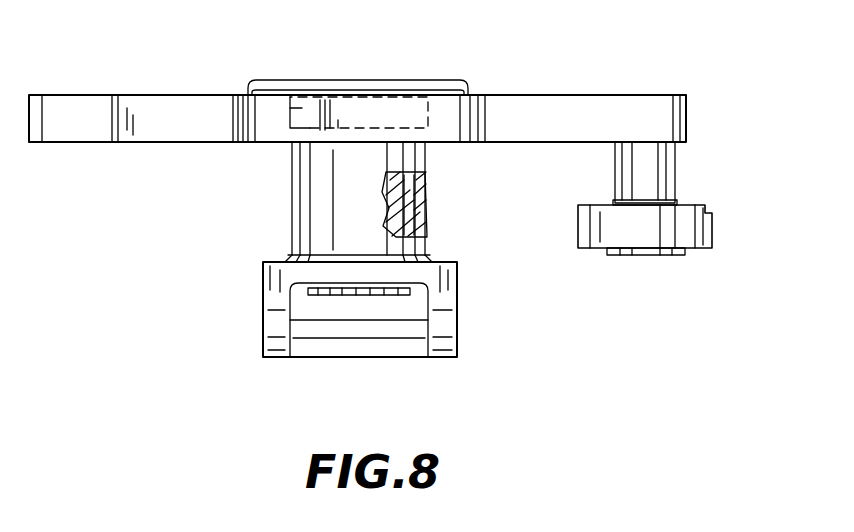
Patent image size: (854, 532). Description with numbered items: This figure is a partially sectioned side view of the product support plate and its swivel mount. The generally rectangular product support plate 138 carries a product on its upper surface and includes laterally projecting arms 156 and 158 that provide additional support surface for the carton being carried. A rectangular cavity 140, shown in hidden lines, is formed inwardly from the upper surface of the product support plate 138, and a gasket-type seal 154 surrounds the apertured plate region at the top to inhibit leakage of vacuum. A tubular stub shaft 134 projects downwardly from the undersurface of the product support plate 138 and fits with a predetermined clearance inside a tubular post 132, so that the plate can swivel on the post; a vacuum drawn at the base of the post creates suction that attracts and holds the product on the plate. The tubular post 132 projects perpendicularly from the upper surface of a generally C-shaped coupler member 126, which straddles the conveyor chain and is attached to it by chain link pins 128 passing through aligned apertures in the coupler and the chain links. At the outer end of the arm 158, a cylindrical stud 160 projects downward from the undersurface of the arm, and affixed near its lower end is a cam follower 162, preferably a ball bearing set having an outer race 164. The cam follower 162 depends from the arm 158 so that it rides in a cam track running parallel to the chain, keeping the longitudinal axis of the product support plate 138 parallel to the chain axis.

The coupler member 126 is at (455, 262).
The chain link pins 128 is at (370, 334).
The tubular post 132 is at (290, 215).
The tubular stub shaft 134 is at (395, 191).
The product support plate 138 is at (273, 128).
The rectangular cavity 140 is at (318, 97).
The gasket-type seal 154 is at (457, 82).
The laterally projecting arm 156 is at (83, 95).
The laterally projecting arm 158 is at (587, 95).
The cylindrical stud 160 is at (675, 168).
The cam follower 162 is at (712, 210).
The outer race 164 is at (578, 232).